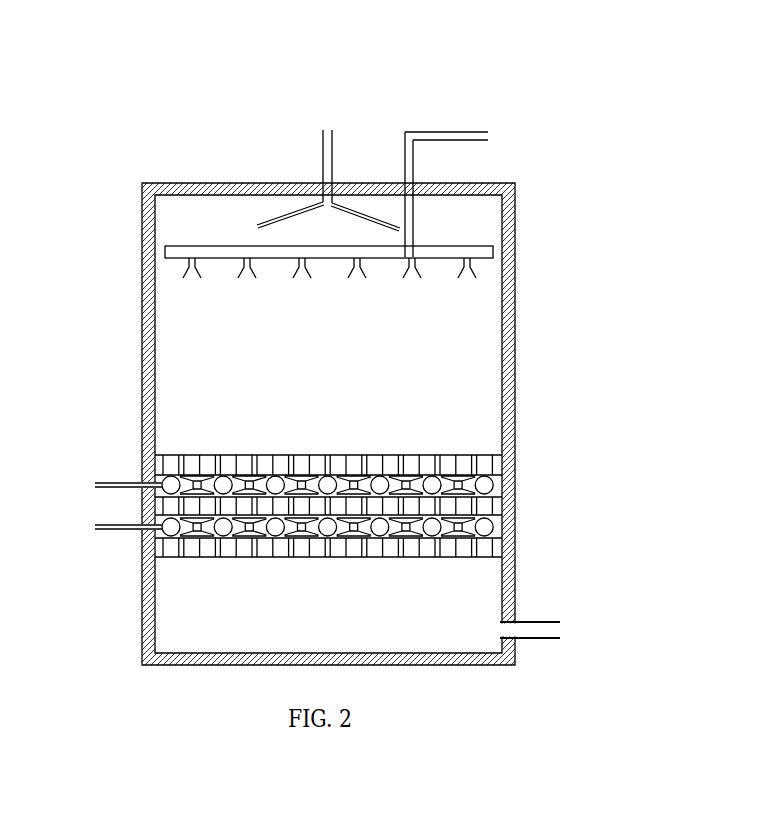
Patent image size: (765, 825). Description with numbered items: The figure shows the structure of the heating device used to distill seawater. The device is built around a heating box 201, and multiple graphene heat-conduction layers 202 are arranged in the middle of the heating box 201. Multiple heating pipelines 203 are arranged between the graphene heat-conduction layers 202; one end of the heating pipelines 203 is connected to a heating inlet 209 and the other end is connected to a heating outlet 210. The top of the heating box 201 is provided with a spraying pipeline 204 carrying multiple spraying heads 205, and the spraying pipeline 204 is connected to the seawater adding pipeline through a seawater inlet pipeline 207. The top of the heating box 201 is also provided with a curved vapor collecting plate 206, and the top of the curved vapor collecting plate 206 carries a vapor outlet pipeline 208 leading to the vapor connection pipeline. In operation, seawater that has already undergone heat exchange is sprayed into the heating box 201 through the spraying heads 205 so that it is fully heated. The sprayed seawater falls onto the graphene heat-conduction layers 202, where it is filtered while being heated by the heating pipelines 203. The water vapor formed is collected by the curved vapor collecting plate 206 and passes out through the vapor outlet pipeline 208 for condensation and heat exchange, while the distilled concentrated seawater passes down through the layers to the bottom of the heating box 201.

The heating box 201 is at (511, 405).
The graphene heat-conduction layer 202 is at (241, 460).
The heating pipeline 203 is at (328, 478).
The spraying pipeline 204 is at (482, 248).
The spraying head 205 is at (183, 278).
The curved vapor collecting plate 206 is at (288, 230).
The seawater inlet pipeline 207 is at (428, 138).
The vapor outlet pipeline 208 is at (323, 168).
The heating inlet 209 is at (120, 483).
The heating outlet 210 is at (95, 523).